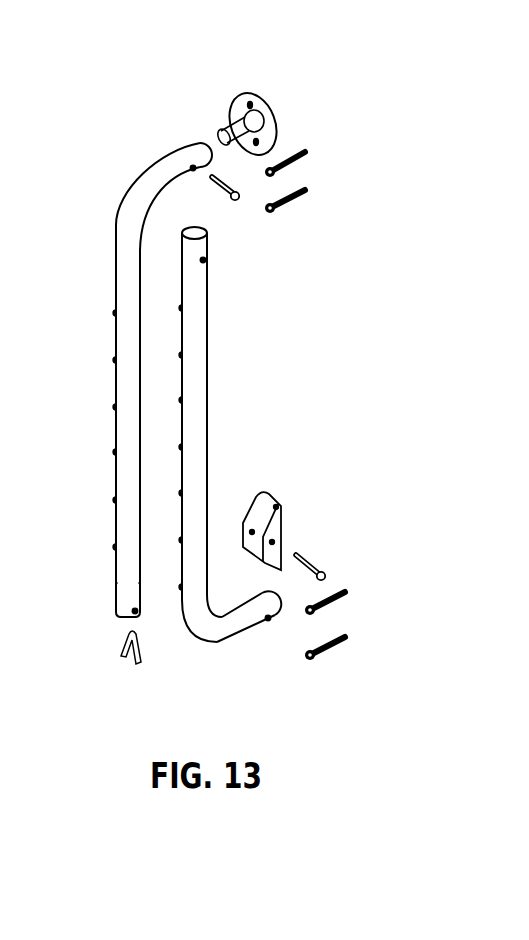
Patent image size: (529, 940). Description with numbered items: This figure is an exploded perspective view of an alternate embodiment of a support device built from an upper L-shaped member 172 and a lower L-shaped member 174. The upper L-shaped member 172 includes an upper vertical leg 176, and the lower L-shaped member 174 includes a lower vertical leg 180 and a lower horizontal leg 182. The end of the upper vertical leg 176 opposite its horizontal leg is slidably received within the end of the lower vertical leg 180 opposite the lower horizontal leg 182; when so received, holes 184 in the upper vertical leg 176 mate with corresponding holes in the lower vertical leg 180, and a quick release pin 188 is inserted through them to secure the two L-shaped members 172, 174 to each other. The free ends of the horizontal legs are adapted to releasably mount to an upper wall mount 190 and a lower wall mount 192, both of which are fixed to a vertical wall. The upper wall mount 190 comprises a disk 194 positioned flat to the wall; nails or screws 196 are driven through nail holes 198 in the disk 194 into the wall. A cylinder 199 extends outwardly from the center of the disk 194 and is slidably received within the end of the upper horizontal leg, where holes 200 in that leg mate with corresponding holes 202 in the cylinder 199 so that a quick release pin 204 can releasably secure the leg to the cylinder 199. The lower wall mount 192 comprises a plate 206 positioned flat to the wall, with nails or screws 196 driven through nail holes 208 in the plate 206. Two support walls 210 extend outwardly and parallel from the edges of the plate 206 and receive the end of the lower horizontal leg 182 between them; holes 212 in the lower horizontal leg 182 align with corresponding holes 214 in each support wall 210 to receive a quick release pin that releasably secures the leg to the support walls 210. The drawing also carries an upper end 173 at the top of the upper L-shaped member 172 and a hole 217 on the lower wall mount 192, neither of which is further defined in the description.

The support arm assembly 172 is at (90, 337).
The upper end of curved tube 173 is at (183, 150).
The inner rod 174 is at (238, 394).
The curved outer tube 176 is at (115, 255).
The lower bend of rod 180 is at (208, 460).
The lower leg of rod 182 is at (236, 643).
The pegs 184 is at (203, 260).
The clip 188 is at (121, 654).
The upper mounting assembly 190 is at (273, 73).
The lower mounting bracket 192 is at (310, 517).
The flange plate 194 is at (277, 118).
The screws 196 is at (298, 197).
The boss 198 is at (243, 93).
The post 199 is at (220, 132).
The peg 200 is at (193, 170).
The sleeve 202 is at (248, 140).
The pins 204 is at (235, 199).
The aperture 206 is at (272, 503).
The bracket plate 208 is at (280, 505).
The bracket tab 210 is at (246, 537).
The rod end 212 is at (268, 620).
The hole 214 is at (251, 531).
The hole 217 is at (274, 542).